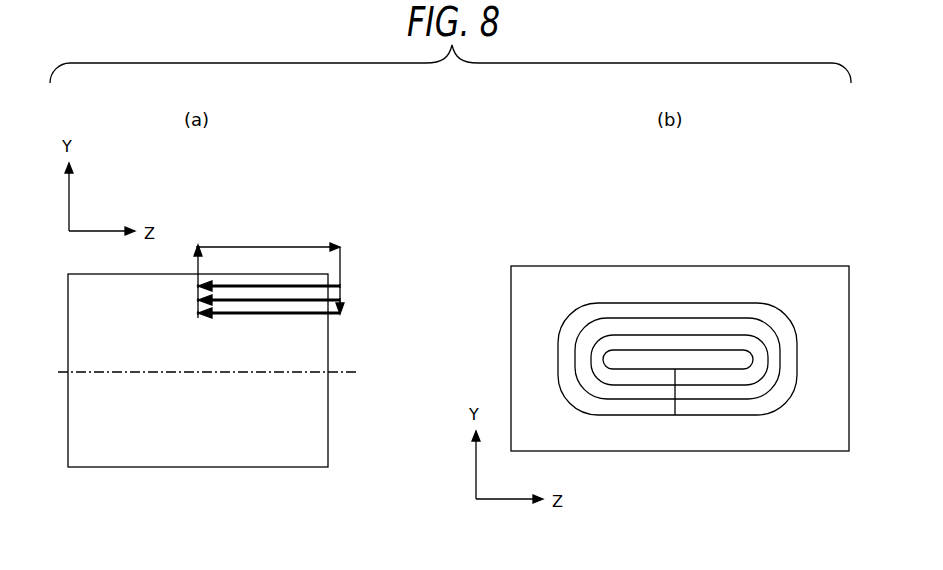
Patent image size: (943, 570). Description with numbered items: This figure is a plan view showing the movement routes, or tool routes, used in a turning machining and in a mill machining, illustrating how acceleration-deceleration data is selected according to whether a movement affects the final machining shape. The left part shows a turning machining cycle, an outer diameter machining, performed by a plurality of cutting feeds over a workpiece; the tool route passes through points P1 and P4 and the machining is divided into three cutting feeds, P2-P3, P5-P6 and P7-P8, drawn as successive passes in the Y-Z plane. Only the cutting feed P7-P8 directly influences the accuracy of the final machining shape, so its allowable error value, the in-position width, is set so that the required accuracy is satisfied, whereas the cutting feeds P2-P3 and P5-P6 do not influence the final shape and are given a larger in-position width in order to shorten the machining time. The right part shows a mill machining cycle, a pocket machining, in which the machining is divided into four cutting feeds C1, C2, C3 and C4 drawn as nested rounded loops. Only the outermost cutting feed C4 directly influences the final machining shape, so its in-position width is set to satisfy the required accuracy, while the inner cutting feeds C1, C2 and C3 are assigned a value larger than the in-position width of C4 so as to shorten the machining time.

The tool route point P1 is at (350, 243).
The cutting feed start point P2 is at (343, 285).
The cutting feed end point P3 is at (195, 286).
The tool route point P4 is at (183, 243).
The cutting feed start point P5 is at (343, 300).
The cutting feed end point P6 is at (195, 300).
The final cutting feed start point P7 is at (343, 315).
The final cutting feed end point P8 is at (195, 314).
The first cutting feed C1 is at (646, 347).
The second cutting feed C2 is at (690, 332).
The third cutting feed C3 is at (732, 318).
The final cutting feed C4 is at (775, 306).